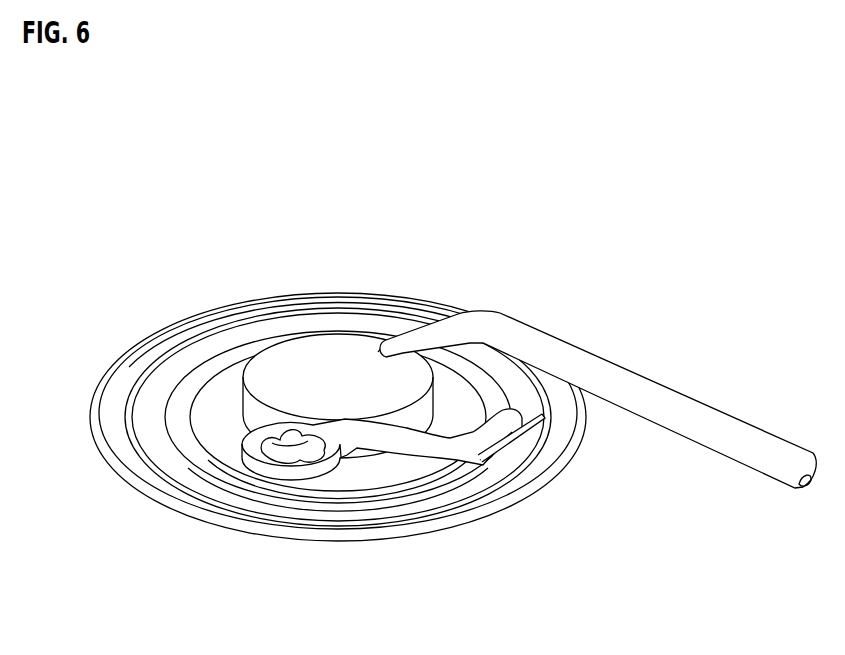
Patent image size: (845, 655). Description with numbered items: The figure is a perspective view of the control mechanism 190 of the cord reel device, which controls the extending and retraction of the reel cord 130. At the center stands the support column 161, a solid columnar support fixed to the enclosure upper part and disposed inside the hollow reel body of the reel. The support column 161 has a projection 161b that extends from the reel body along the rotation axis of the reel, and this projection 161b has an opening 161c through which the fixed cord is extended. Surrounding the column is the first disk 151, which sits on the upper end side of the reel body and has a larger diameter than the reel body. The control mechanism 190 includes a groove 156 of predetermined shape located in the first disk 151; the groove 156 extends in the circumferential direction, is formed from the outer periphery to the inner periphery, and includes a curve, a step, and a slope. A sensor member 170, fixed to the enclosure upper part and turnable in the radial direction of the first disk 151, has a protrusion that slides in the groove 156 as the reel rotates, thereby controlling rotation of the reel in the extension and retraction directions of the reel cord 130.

The reel cord 130 is at (633, 385).
The first disk 151 is at (432, 301).
The groove 156 is at (165, 407).
The support column 161 is at (299, 291).
The projection 161b is at (338, 398).
The opening 161c is at (385, 347).
The sensor member 170 is at (284, 474).
The control mechanism 190 is at (297, 371).